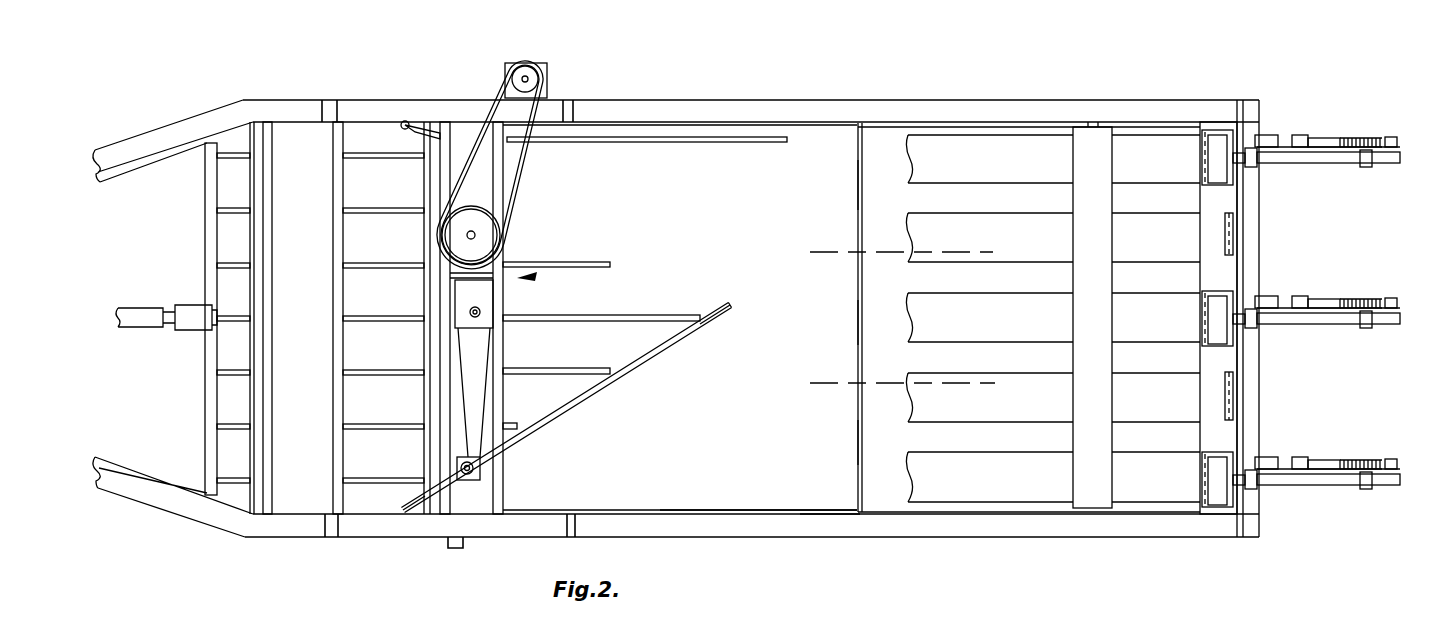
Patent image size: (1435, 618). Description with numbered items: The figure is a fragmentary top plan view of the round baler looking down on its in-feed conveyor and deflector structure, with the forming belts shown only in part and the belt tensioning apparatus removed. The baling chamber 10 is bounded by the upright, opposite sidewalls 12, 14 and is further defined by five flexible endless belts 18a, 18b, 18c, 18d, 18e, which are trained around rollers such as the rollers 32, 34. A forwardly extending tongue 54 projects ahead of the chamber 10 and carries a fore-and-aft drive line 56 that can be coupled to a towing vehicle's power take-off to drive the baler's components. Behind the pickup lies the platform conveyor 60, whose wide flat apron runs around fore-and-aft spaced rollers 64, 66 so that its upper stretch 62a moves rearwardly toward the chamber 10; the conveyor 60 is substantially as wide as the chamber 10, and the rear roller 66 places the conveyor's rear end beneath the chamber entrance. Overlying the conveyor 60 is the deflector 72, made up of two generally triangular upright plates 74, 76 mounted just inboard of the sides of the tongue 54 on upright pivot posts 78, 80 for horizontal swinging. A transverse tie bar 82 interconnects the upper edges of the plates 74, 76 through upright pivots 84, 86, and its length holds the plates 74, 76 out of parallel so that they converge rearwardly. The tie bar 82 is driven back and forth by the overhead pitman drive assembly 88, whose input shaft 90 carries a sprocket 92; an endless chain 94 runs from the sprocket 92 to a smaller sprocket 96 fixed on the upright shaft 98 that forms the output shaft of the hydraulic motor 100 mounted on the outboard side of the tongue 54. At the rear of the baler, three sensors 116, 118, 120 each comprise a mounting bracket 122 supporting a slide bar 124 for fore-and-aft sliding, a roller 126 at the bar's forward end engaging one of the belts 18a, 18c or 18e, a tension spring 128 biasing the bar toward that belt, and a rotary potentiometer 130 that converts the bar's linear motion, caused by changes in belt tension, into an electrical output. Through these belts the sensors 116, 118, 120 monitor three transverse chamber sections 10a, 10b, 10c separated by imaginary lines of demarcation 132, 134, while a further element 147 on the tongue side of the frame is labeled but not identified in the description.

The baling chamber 10 is at (880, 118).
The side chamber section 10a is at (832, 187).
The center chamber section 10b is at (832, 323).
The side chamber section 10c is at (832, 444).
The sidewall 12 is at (898, 100).
The sidewall 14 is at (890, 537).
The belt 18a is at (964, 184).
The belt 18b is at (964, 263).
The belt 18c is at (964, 344).
The belt 18d is at (946, 424).
The belt 18e is at (1003, 464).
The roller 32 is at (1205, 235).
The roller 34 is at (1100, 393).
The tongue 54 is at (125, 146).
The drive line 56 is at (134, 308).
The platform conveyor 60 is at (740, 512).
The upper stretch 62a is at (741, 163).
The roller 64 is at (470, 514).
The rear transverse roller 66 is at (843, 514).
The deflector structure 72 is at (702, 337).
The plate 74 is at (650, 142).
The plate 76 is at (585, 397).
The pivot post 78 is at (406, 128).
The pivot post 80 is at (409, 510).
The tie bar 82 is at (472, 390).
The pivot 84 is at (480, 120).
The pivot 86 is at (473, 468).
The pitman drive assembly 88 is at (536, 277).
The input shaft 90 is at (475, 235).
The gear sprocket 92 is at (446, 235).
The endless chain 94 is at (527, 153).
The sprocket 96 is at (538, 80).
The pulley shaft 98 is at (520, 65).
The hydraulic motor 100 is at (547, 68).
The sensor 116 is at (1317, 143).
The sensor 118 is at (1343, 290).
The sensor 120 is at (1346, 436).
The mounting bracket 122 is at (1366, 167).
The slide bar 124 is at (1331, 165).
The roller 126 is at (1215, 170).
The tension spring 128 is at (1365, 135).
The rotary potentiometer 130 is at (1270, 134).
The line of demarcation 132 is at (826, 258).
The line of demarcation 134 is at (828, 388).
The support post 147 is at (205, 383).